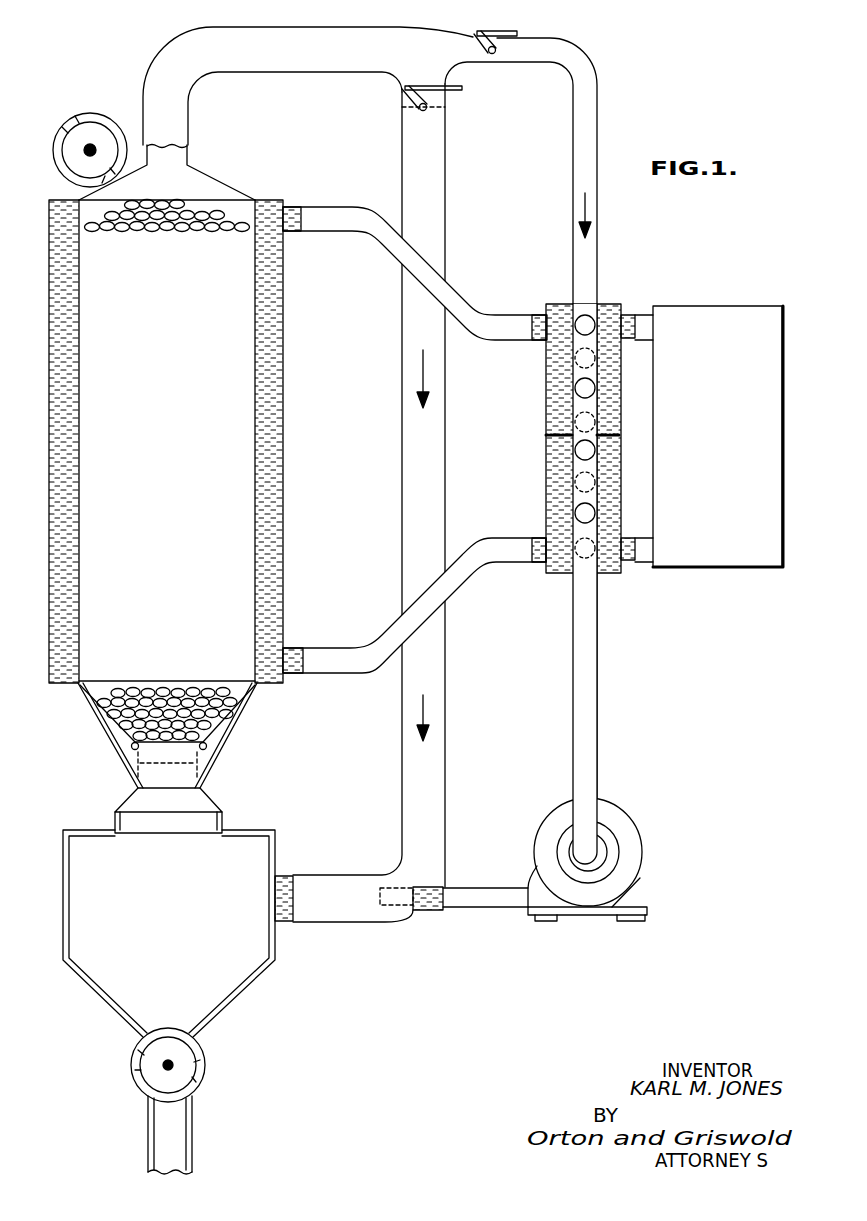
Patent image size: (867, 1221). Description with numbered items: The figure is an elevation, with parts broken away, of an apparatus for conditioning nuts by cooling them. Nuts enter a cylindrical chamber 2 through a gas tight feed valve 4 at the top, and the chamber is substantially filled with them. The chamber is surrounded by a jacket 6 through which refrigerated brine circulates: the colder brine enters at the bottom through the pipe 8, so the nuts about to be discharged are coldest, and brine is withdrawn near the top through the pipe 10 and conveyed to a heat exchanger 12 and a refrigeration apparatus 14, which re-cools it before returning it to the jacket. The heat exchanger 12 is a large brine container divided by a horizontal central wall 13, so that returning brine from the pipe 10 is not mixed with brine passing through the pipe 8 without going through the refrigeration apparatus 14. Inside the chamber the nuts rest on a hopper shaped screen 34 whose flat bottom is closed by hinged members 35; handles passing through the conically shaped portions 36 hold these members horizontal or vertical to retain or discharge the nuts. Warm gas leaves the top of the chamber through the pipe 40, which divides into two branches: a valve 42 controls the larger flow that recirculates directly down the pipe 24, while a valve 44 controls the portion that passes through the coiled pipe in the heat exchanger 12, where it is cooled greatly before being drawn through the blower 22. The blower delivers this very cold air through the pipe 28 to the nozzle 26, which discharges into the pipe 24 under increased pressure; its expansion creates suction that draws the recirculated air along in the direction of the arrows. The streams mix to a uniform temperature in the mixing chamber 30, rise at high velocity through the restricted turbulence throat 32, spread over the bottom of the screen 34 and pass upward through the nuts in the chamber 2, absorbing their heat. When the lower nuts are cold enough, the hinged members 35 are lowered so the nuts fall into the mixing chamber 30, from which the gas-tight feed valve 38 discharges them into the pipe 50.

The chamber 2 is at (182, 414).
The feed valve 4 is at (76, 118).
The jacket 6 is at (287, 420).
The pipe 8 is at (337, 648).
The pipe 10 is at (330, 208).
The heat exchanger 12 is at (546, 403).
The central wall 13 is at (565, 437).
The refrigeration apparatus 14 is at (711, 312).
The blower 22 is at (632, 833).
The pipe 24 is at (440, 784).
The nozzle 26 is at (398, 888).
The pipe 28 is at (492, 896).
The mixing chamber 30 is at (258, 972).
The turbulence throat 32 is at (136, 793).
The screen 34 is at (100, 697).
The hinged members 35 is at (152, 744).
The conically shaped portions 36 is at (232, 740).
The feed valve 38 is at (206, 1068).
The pipe 40 is at (238, 73).
The valve 42 is at (447, 106).
The valve 44 is at (493, 55).
The pipe 50 is at (193, 1146).